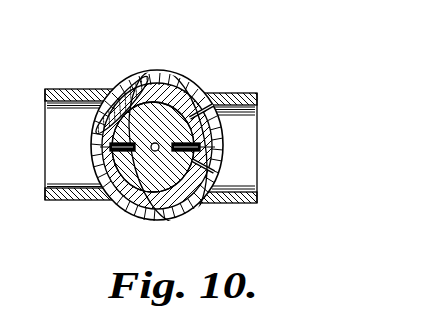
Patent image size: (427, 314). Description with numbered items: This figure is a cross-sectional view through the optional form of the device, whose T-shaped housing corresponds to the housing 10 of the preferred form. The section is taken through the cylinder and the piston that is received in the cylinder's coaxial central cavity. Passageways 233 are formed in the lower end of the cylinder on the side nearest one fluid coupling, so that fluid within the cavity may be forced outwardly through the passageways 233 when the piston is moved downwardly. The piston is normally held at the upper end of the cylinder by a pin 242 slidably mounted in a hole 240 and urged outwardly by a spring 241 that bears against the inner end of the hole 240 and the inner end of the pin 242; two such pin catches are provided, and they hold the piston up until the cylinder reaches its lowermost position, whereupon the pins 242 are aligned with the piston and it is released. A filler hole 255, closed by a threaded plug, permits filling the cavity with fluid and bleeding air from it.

The housing 10 is at (186, 74).
The passageways 233 is at (222, 94).
The hole 240 is at (142, 71).
The spring 241 is at (113, 200).
The pin 242 is at (205, 148).
The filler hole 255 is at (130, 213).